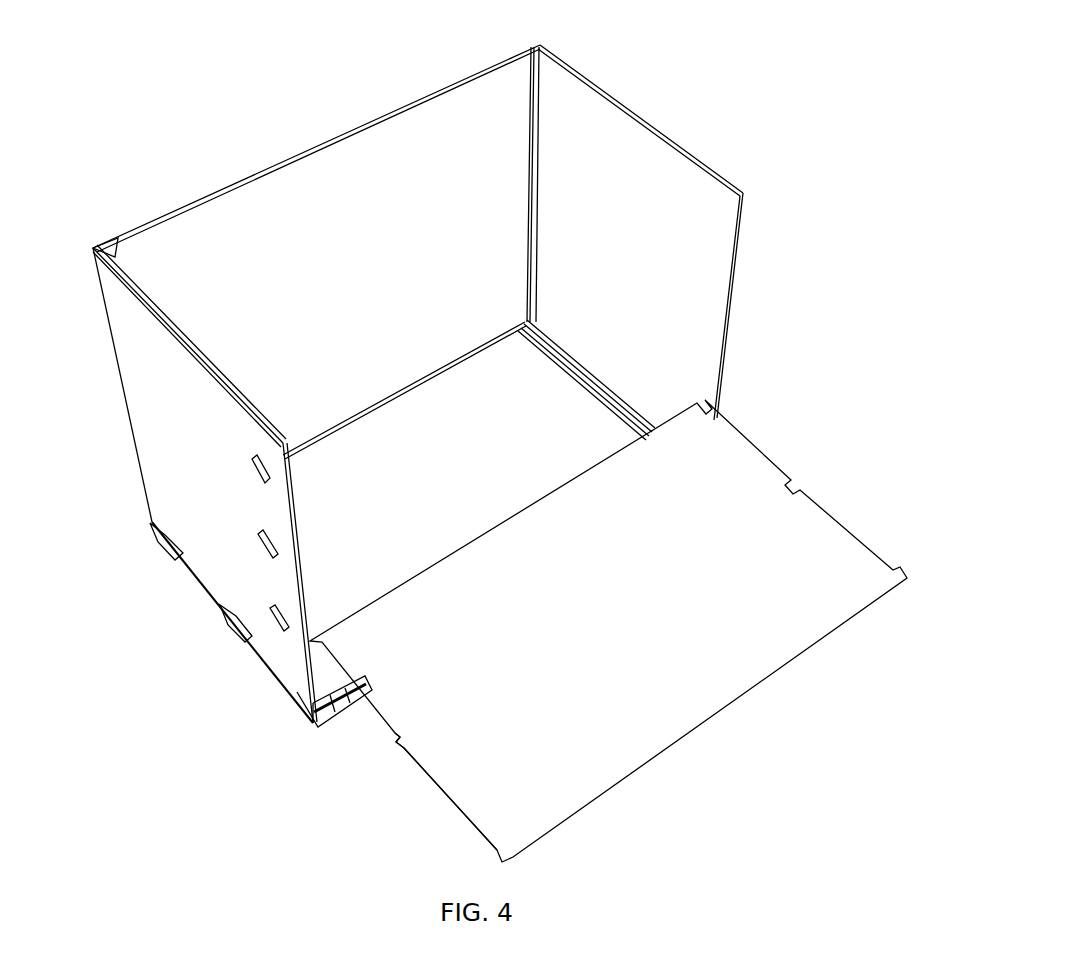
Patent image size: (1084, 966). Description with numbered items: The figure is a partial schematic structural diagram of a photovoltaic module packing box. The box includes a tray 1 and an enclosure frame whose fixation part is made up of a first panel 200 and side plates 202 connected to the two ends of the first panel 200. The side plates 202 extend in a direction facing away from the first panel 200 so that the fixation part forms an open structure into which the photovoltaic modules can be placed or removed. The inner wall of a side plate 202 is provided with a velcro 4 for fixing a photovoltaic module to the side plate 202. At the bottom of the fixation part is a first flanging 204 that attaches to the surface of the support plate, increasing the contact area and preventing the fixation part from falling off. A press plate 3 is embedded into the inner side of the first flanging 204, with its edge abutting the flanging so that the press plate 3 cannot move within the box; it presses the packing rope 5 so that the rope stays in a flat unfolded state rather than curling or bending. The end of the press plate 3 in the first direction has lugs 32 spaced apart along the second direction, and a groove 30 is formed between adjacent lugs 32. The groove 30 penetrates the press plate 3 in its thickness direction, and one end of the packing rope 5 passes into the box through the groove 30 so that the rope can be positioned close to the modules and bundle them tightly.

The first panel 200 is at (362, 150).
The side plate 202 is at (660, 180).
The packing rope 5 is at (527, 62).
The first flanging 204 is at (637, 406).
The press plate 3 is at (683, 697).
The groove 30 is at (438, 790).
The lug 32 is at (395, 745).
The tray 1 is at (222, 625).
The velcro 4 is at (275, 622).